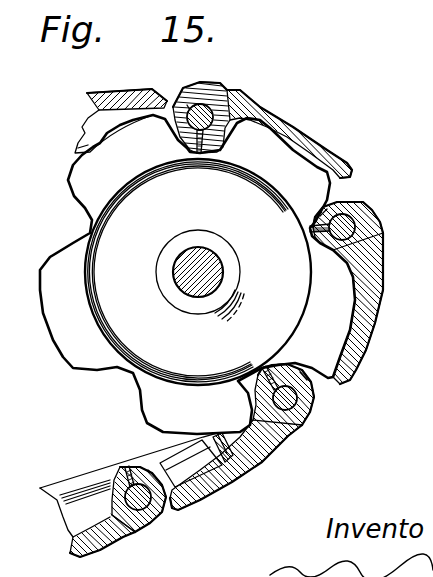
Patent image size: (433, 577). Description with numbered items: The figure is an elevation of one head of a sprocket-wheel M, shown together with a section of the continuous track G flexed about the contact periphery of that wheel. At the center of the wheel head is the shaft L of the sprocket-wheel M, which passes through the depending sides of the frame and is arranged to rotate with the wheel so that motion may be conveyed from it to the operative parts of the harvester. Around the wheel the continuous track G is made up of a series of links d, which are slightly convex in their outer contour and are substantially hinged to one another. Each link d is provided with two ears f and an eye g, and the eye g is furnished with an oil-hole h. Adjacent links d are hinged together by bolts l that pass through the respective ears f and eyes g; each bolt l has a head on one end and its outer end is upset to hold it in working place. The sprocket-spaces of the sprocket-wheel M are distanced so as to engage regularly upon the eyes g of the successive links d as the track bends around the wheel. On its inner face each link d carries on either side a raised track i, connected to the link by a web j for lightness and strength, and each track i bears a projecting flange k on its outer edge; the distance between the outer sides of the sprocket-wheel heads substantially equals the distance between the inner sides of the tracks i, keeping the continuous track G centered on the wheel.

The link d is at (136, 93).
The ear f is at (180, 98).
The eye g is at (200, 104).
The bolt l is at (216, 95).
The oil-hole h is at (186, 148).
The continuous track G is at (101, 131).
The shaft of the sprocket-wheel L is at (173, 273).
The sprocket-wheel M is at (197, 274).
The track i is at (60, 502).
The projecting flange k is at (68, 484).
The web j is at (224, 470).